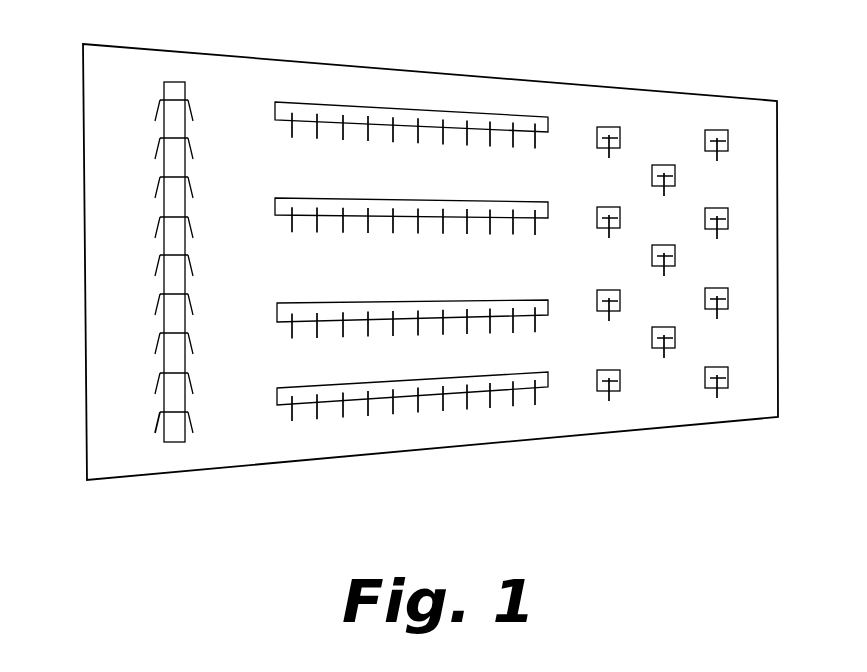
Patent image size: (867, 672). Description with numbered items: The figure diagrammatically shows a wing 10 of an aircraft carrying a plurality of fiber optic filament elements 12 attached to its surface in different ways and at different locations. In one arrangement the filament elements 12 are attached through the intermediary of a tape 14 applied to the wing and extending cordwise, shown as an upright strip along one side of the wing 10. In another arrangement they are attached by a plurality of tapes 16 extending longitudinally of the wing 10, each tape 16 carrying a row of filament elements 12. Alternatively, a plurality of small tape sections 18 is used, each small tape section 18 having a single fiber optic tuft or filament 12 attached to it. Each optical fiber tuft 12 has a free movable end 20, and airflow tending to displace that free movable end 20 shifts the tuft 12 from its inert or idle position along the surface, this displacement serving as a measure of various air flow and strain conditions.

The wing 10 is at (666, 83).
The fiber optic filament element 12 is at (193, 422).
The tape 14 is at (167, 438).
The tape 16 is at (405, 107).
The small tape section 18 is at (729, 217).
The free movable end 20 is at (162, 422).